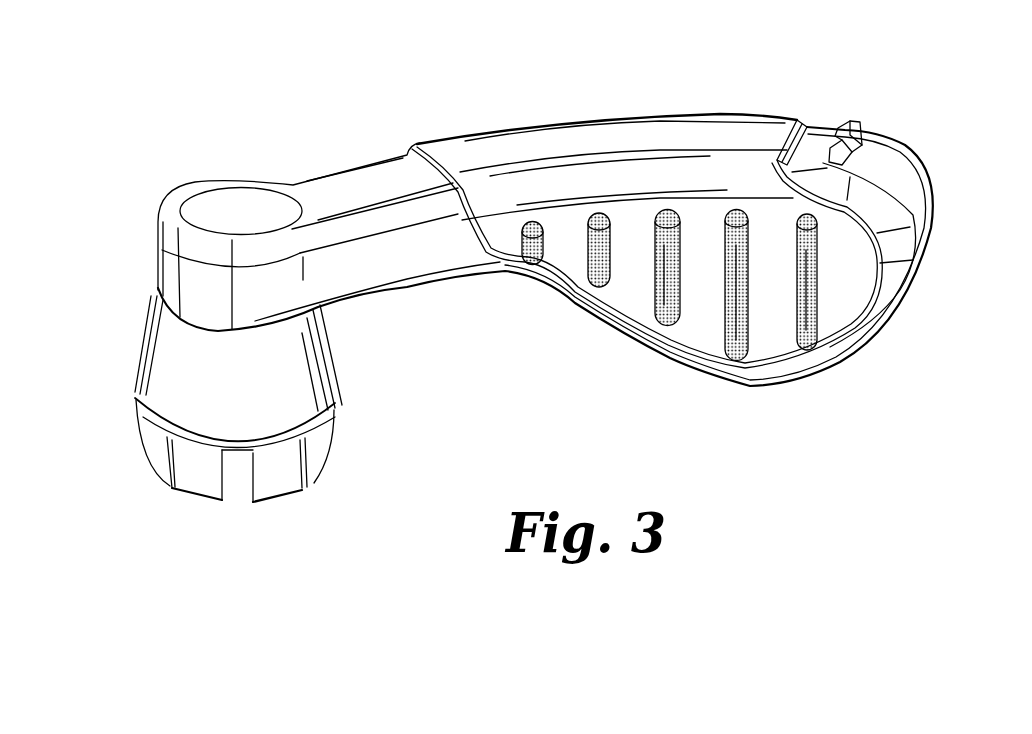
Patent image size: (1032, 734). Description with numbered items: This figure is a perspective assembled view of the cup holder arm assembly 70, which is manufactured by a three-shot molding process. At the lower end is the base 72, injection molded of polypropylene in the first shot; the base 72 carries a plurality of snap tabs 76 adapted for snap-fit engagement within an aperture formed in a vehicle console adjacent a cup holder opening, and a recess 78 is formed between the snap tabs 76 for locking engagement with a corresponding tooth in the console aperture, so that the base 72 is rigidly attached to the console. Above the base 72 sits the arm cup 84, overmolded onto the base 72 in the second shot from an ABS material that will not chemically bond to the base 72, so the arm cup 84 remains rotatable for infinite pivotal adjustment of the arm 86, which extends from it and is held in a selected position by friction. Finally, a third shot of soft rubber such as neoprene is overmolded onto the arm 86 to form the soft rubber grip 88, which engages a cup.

The cup holder arm assembly 70 is at (345, 112).
The base 72 is at (165, 336).
The snap tabs 76 is at (183, 488).
The recess 78 is at (238, 492).
The arm cup 84 is at (167, 252).
The arm 86 is at (414, 257).
The soft rubber grip 88 is at (613, 137).